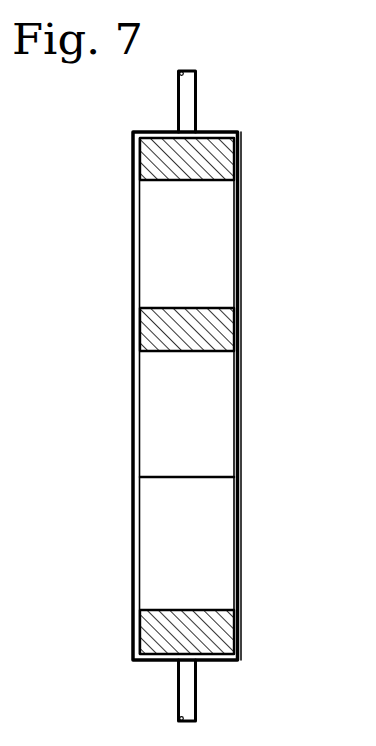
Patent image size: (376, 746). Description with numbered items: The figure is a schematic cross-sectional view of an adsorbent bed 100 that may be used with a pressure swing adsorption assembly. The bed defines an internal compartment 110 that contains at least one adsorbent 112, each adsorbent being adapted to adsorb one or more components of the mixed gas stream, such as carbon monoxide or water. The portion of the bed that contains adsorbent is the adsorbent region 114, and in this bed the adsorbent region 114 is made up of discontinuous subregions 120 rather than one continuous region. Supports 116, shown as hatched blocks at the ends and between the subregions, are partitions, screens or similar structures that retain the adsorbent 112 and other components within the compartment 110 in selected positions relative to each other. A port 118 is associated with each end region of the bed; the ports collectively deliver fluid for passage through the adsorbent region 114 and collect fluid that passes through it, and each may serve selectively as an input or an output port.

The adsorbent bed 100 is at (69, 172).
The internal compartment 110 is at (243, 285).
The adsorbent 112 is at (173, 293).
The adsorbent region 114 is at (225, 250).
The supports 116 is at (162, 167).
The port 118 is at (177, 110).
The discontinuous subregions 120 is at (163, 240).